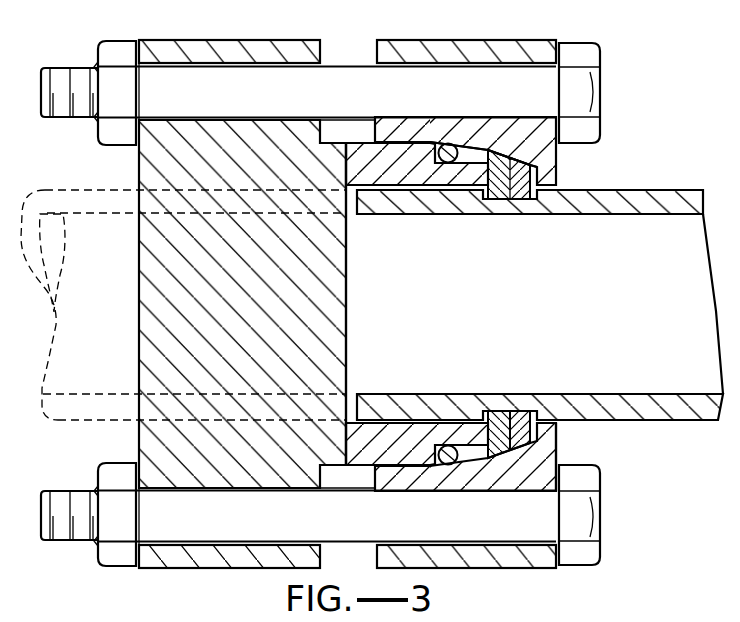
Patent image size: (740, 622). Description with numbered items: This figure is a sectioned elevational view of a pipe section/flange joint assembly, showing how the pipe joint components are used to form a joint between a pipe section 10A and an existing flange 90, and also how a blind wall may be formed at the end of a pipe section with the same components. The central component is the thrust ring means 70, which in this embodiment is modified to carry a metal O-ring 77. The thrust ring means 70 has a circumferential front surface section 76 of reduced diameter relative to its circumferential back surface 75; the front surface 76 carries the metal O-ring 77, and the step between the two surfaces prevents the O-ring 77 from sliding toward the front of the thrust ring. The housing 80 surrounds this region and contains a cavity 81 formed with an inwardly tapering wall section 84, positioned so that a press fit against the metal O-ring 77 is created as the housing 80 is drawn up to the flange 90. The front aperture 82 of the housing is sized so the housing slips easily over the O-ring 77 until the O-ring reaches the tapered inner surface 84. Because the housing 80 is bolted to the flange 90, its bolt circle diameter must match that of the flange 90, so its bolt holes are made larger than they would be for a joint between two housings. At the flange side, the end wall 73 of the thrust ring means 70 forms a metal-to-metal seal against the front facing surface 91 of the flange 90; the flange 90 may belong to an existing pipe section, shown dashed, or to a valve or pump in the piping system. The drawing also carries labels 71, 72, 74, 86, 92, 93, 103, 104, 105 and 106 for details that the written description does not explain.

The pipe section 10A is at (653, 192).
The thrust ring means 70 is at (357, 147).
The gland ring 71 is at (402, 153).
The pipe groove 72 is at (470, 190).
The end wall 73 is at (380, 190).
The conical surface 74 is at (427, 186).
The circumferential back surface 75 is at (447, 143).
The circumferential front surface section 76 is at (489, 152).
The metal O-ring 77 is at (458, 148).
The housing 80 is at (557, 444).
The cavity 81 is at (410, 468).
The front aperture 82 is at (377, 470).
The inwardly tapering wall section 84 is at (470, 458).
The lower packing 86 is at (500, 447).
The flange 90 is at (160, 442).
The front facing surface 91 is at (347, 300).
The flange plate 92 is at (212, 546).
The phantom end cap 93 is at (114, 185).
The bolt 103 is at (387, 617).
The nut 104 is at (457, 617).
The bolt 105 is at (267, 615).
The nut 106 is at (236, 621).